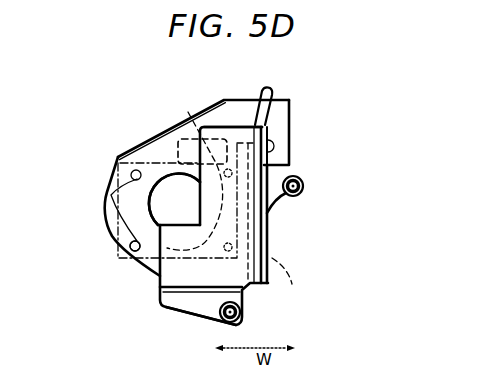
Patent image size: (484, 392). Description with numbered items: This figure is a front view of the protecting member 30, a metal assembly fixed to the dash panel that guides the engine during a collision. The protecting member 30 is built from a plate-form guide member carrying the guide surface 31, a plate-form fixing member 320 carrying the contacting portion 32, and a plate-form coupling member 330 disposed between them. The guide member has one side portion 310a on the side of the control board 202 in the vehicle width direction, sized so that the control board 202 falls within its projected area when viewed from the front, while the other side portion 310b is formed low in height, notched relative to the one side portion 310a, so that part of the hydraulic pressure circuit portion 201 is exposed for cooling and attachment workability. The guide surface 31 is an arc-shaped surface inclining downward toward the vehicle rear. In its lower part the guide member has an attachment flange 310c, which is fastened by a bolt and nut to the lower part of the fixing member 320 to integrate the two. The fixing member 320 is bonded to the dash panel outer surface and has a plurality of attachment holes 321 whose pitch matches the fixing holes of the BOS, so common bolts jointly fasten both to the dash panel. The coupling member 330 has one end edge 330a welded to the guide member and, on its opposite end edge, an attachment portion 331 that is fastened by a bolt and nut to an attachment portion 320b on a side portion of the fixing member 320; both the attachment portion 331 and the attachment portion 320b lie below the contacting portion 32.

The protecting member 30 is at (300, 252).
The guide surface 31 is at (187, 266).
The contacting portion 32 is at (246, 122).
The hydraulic pressure circuit portion 201 is at (113, 224).
The control board 202 is at (250, 290).
The one side portion 310a is at (232, 127).
The other side portion 310b is at (180, 222).
The attachment flange 310c is at (195, 303).
The fixing member 320 is at (147, 137).
The attachment portion 320b is at (270, 213).
The attachment holes 321 is at (193, 132).
The coupling member 330 is at (266, 127).
The one end edge 330a is at (297, 282).
The attachment portion 331 is at (272, 200).